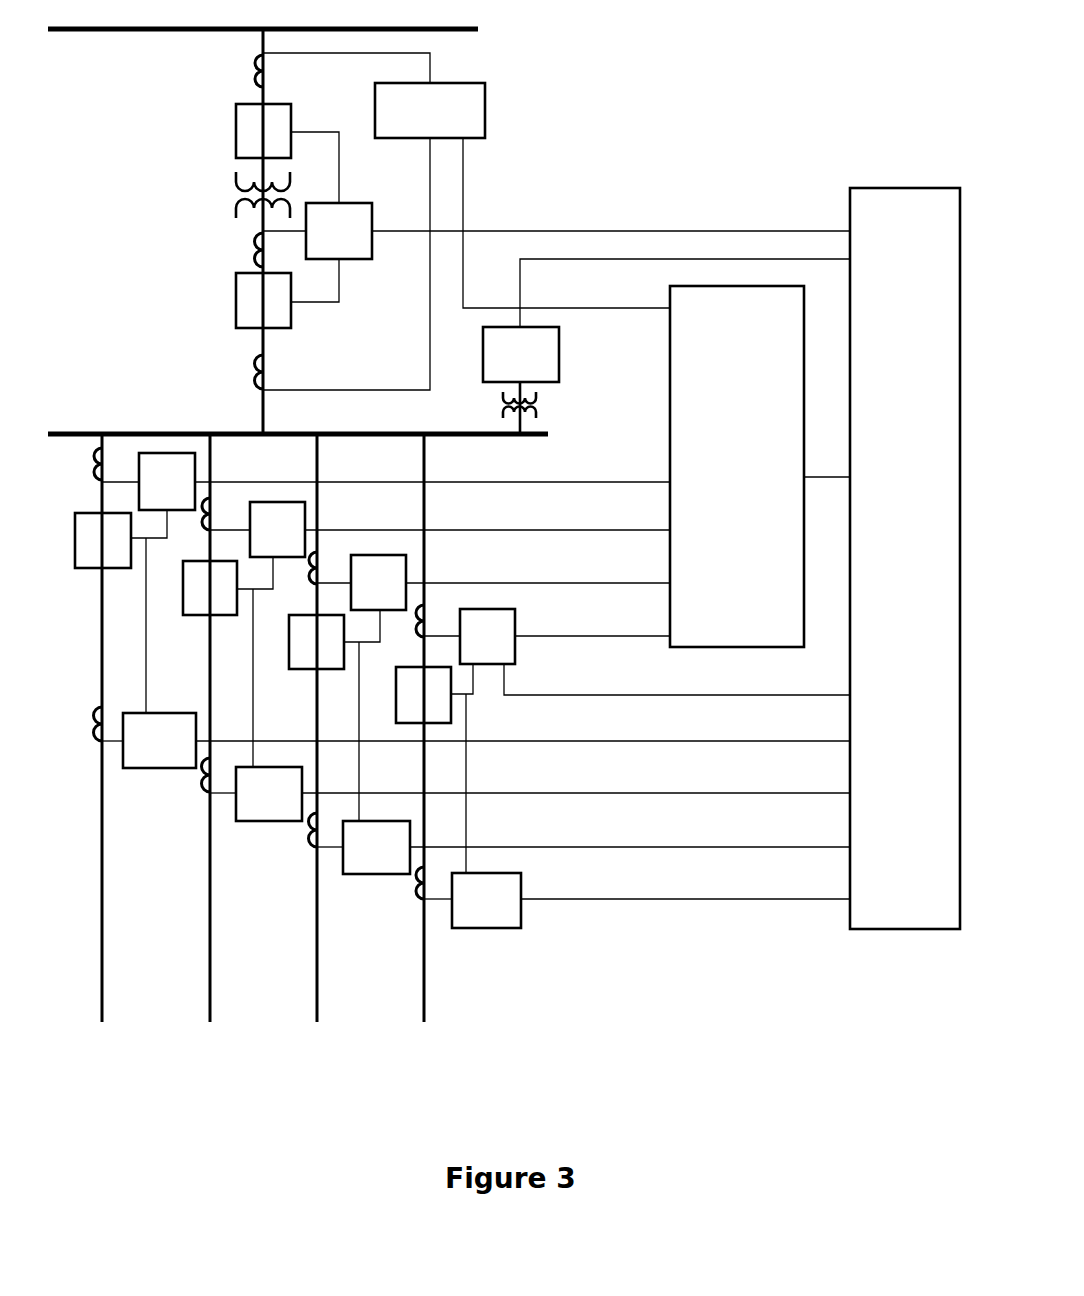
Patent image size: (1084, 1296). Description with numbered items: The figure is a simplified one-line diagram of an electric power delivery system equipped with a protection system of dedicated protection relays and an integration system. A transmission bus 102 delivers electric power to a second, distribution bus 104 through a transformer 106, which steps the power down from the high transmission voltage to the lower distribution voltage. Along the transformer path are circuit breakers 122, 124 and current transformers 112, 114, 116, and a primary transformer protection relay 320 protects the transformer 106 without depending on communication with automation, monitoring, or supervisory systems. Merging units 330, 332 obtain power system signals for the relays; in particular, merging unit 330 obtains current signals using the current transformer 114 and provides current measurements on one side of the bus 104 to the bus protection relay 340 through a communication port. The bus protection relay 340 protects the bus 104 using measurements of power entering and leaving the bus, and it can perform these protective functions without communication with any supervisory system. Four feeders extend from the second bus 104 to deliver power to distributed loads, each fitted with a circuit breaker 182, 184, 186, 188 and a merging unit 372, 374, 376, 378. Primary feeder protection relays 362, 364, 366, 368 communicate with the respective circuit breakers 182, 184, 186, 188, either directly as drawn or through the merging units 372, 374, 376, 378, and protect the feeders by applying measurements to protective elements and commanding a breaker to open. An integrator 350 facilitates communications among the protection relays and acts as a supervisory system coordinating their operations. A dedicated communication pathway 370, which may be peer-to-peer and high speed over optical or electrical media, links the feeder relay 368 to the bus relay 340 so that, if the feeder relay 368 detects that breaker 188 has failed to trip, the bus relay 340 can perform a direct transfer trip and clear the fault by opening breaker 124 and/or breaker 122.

The bus 102 is at (128, 30).
The second bus 104 is at (86, 432).
The transformer 106 is at (234, 186).
The current transformer 112 is at (255, 80).
The current transformer 114 is at (255, 258).
The current transformer 116 is at (255, 360).
The circuit breaker 122 is at (234, 130).
The circuit breaker 124 is at (234, 300).
The circuit breaker 182 is at (86, 572).
The circuit breaker 184 is at (194, 618).
The circuit breaker 186 is at (306, 670).
The circuit breaker 188 is at (451, 712).
The primary transformer protection relay 320 is at (434, 84).
The merging unit 330 is at (342, 204).
The merging unit 332 is at (559, 345).
The bus protection relay 340 is at (906, 188).
The integrator 350 is at (668, 444).
The primary feeder protection relay 362 is at (195, 472).
The primary feeder protection relay 364 is at (305, 520).
The primary feeder protection relay 366 is at (406, 574).
The primary feeder protection relay 368 is at (515, 625).
The dedicated communication pathway 370 is at (628, 695).
The merging unit 372 is at (154, 768).
The merging unit 374 is at (264, 821).
The merging unit 376 is at (376, 874).
The merging unit 378 is at (488, 928).